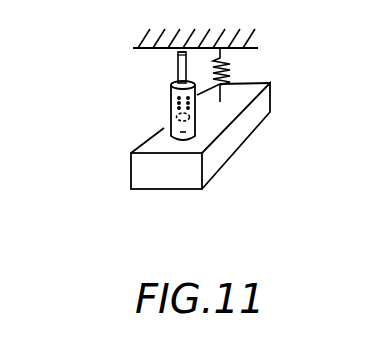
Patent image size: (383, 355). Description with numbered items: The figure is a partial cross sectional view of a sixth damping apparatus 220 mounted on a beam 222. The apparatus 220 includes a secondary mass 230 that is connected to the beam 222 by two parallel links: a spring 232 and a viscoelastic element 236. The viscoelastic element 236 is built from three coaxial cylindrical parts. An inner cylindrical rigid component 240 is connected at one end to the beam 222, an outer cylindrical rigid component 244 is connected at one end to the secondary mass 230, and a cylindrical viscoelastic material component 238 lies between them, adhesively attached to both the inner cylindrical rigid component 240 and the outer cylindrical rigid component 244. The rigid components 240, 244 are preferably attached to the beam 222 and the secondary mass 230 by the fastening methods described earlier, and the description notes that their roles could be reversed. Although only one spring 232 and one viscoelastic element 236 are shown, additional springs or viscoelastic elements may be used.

The damping apparatus 220 is at (106, 197).
The beam 222 is at (246, 49).
The secondary mass 230 is at (217, 160).
The spring 232 is at (226, 89).
The viscoelastic element 236 is at (150, 108).
The cylindrical viscoelastic material component 238 is at (178, 80).
The inner cylindrical rigid component 240 is at (177, 59).
The outer cylindrical rigid component 244 is at (167, 123).